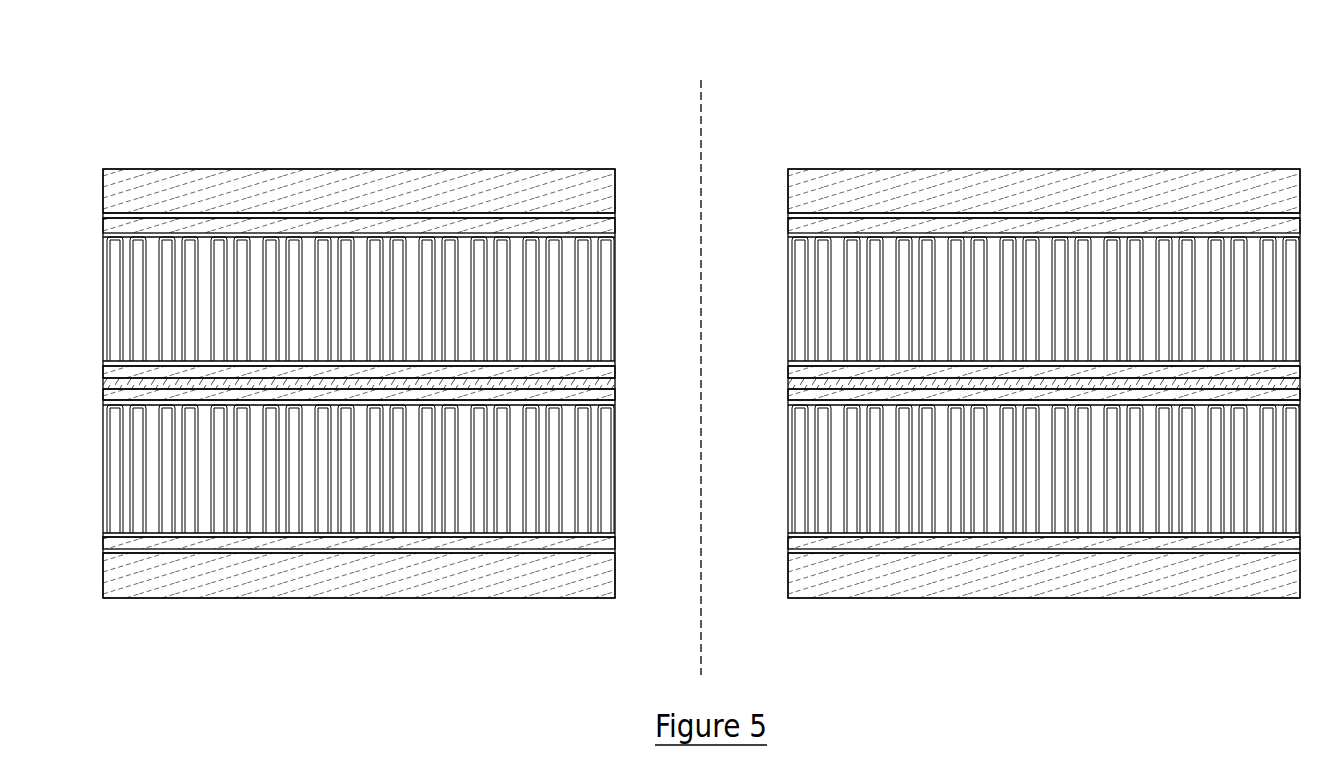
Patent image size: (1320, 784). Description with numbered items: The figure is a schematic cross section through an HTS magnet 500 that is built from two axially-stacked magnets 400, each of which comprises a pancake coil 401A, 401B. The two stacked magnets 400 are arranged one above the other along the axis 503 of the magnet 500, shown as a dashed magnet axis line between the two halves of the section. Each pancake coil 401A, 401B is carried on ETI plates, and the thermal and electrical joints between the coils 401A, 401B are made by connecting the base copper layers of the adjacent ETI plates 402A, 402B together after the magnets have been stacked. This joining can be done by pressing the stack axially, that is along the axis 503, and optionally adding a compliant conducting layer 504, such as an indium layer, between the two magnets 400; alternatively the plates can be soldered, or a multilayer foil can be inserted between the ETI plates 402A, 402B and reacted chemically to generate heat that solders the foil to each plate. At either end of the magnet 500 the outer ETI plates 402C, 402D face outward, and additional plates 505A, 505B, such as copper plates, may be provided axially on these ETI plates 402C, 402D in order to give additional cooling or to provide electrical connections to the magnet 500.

The magnet 500 is at (143, 147).
The axially-stacked magnet 400 is at (92, 477).
The pancake coil 401A is at (1125, 290).
The pancake coil 401B is at (1128, 470).
The ETI plate 402A is at (617, 377).
The ETI plate 402B is at (617, 388).
The ETI plate 402C is at (617, 235).
The ETI plate 402D is at (617, 536).
The axis 503 is at (703, 347).
The compliant conducting layer 504 is at (795, 382).
The additional plate 505A is at (430, 169).
The additional plate 505B is at (432, 598).